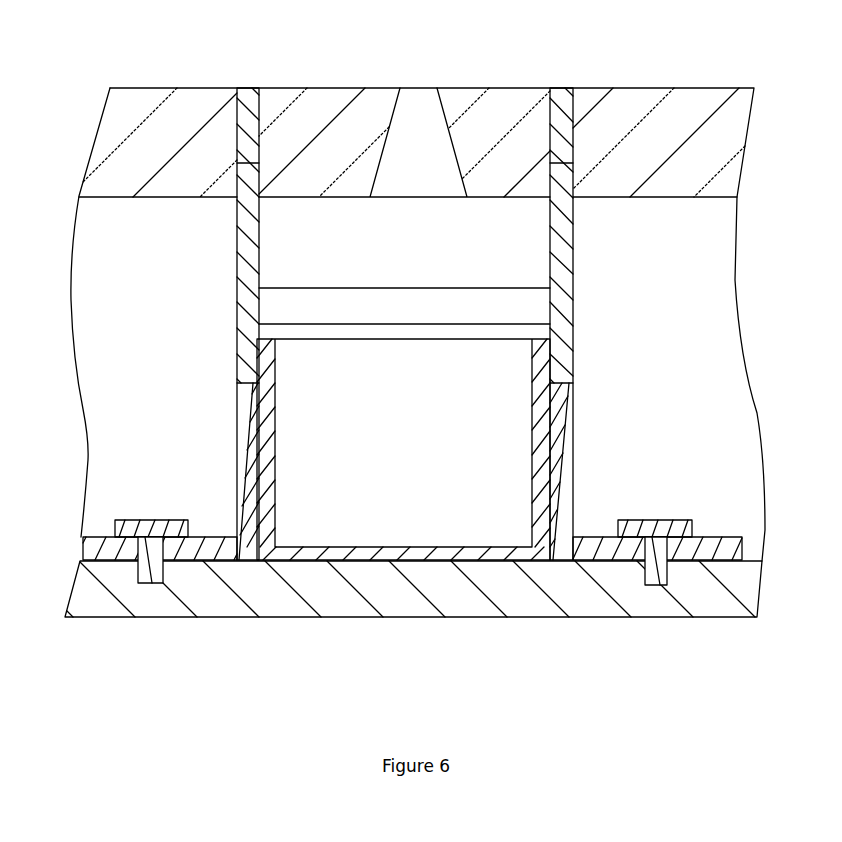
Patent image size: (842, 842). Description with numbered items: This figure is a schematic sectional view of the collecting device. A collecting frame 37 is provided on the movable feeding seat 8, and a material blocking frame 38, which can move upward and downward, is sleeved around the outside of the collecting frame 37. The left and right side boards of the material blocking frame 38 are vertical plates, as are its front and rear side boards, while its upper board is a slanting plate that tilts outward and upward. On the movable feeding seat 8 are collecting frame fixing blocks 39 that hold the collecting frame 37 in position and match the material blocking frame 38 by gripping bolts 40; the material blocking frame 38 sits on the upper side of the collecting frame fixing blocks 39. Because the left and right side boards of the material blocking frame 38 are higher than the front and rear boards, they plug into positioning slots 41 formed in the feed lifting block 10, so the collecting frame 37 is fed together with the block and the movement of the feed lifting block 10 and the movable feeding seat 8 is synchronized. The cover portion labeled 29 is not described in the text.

The movable feeding seat 8 is at (560, 580).
The feed lifting block 10 is at (118, 135).
The cover plate 29 is at (402, 133).
The collecting frame 37 is at (263, 367).
The material blocking frame 38 is at (560, 188).
The collecting frame fixing block 39 is at (242, 468).
The gripping bolt 40 is at (132, 562).
The positioning slot 41 is at (250, 113).